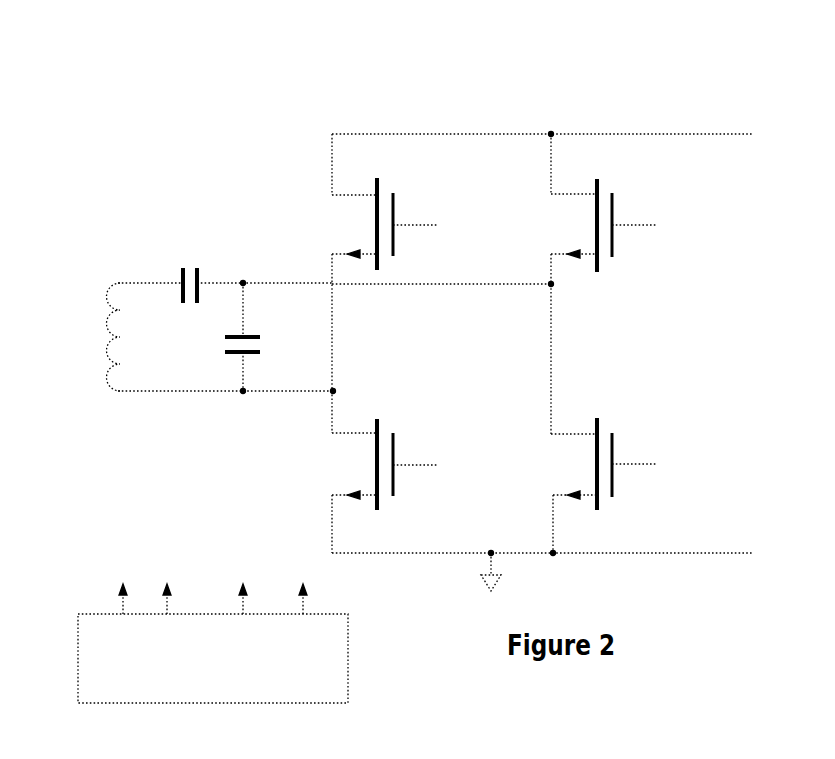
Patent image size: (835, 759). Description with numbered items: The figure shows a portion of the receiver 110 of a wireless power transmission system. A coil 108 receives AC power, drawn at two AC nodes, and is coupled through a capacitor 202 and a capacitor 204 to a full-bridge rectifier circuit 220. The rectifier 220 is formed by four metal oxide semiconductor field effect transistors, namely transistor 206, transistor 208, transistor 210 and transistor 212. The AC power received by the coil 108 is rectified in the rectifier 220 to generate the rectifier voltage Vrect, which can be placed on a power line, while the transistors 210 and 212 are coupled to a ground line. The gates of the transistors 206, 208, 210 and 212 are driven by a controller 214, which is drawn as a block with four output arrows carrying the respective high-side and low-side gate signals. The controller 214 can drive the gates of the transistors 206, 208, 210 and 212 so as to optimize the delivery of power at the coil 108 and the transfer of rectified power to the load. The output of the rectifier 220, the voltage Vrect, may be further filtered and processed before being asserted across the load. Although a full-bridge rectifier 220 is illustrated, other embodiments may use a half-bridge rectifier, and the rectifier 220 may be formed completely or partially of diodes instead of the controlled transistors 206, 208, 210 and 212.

The receiver 110 is at (172, 93).
The coil 108 is at (100, 322).
The capacitor 202 is at (165, 251).
The capacitor 204 is at (227, 345).
The metal oxide semiconductor field effect transistor 206 is at (407, 195).
The metal oxide semiconductor field effect transistor 208 is at (598, 182).
The metal oxide semiconductor field effect transistor 210 is at (393, 433).
The metal oxide semiconductor field effect transistor 212 is at (598, 423).
The controller 214 is at (137, 695).
The full-bridge rectifier circuit 220 is at (522, 371).